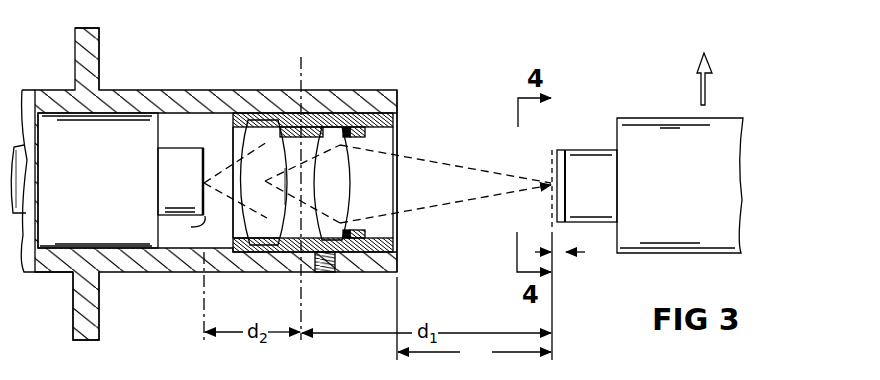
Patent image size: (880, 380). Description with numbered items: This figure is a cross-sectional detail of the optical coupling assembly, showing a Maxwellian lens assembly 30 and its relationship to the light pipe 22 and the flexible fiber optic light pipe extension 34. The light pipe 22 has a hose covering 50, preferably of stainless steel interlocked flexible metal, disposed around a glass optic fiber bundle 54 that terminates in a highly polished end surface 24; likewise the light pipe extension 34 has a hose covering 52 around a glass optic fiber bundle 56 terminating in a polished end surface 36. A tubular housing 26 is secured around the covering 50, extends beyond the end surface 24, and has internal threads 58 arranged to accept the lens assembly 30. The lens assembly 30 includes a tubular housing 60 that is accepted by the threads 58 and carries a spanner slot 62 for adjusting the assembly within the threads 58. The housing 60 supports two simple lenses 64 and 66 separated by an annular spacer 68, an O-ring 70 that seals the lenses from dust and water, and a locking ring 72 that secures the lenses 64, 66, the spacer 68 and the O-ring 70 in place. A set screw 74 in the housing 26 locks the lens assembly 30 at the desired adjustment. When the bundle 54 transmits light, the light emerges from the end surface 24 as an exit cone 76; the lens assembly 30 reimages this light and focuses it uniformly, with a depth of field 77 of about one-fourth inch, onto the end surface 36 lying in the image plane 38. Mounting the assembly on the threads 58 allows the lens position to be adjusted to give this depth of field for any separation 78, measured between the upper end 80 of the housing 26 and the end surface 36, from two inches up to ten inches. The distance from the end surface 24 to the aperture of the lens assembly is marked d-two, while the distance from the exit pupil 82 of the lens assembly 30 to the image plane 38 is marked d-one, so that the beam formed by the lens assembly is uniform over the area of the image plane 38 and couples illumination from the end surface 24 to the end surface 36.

The light pipe 22 is at (31, 88).
The end surface 24 is at (186, 227).
The tubular housing 26 is at (113, 89).
The Maxwellian lens assembly 30 is at (236, 278).
The flexible fiber optic light pipe extension 34 is at (661, 112).
The end surface 36 is at (550, 198).
The image plane 38 is at (554, 315).
The hose covering 50 is at (105, 186).
The hose covering 52 is at (685, 184).
The glass optic fiber bundle 54 is at (193, 189).
The glass optic fiber bundle 56 is at (597, 197).
The internal threads 58 is at (331, 122).
The tubular housing 60 is at (292, 252).
The spanner slot 62 is at (400, 251).
The simple lens 64 is at (278, 246).
The simple lens 66 is at (342, 194).
The annular spacer 68 is at (298, 112).
The O-ring 70 is at (345, 233).
The locking ring 72 is at (365, 236).
The set screw 74 is at (323, 271).
The exit cone 76 is at (216, 188).
The depth of field 77 is at (558, 254).
The separation 78 is at (474, 319).
The upper end 80 is at (398, 104).
The exit pupil 82 is at (300, 303).